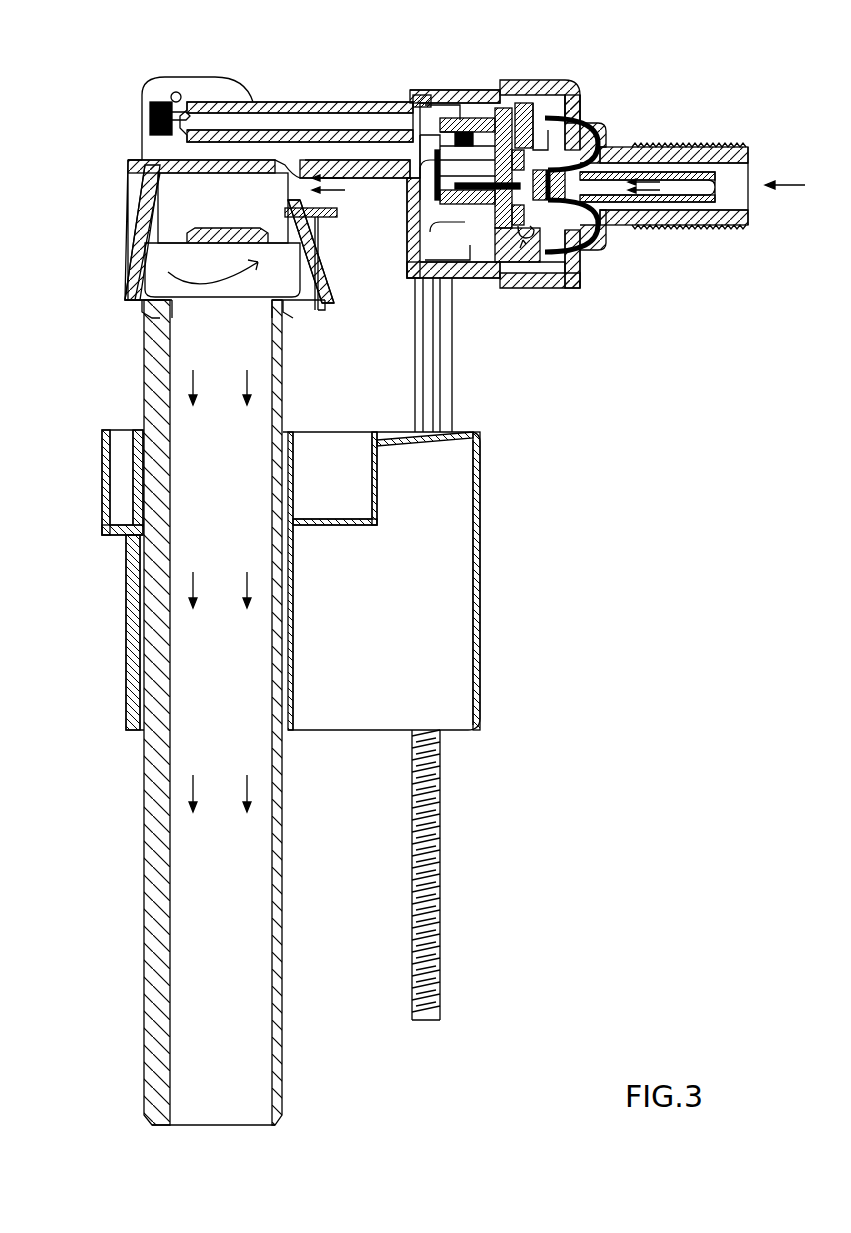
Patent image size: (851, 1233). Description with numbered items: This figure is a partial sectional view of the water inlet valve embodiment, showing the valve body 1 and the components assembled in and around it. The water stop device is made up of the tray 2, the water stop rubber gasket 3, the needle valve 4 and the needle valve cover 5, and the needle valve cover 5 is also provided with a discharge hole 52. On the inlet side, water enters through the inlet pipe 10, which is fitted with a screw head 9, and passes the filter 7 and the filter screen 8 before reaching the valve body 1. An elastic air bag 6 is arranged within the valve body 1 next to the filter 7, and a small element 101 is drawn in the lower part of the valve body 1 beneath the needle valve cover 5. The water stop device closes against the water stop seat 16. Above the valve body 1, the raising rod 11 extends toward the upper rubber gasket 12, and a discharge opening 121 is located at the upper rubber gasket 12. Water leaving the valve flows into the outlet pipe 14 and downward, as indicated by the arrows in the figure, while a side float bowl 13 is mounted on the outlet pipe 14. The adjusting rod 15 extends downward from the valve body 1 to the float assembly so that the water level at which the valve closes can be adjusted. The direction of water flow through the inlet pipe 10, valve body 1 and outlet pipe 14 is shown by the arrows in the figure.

The valve body 1 is at (415, 95).
The tray 2 is at (457, 137).
The water stop rubber gasket 3 is at (485, 132).
The needle valve 4 is at (568, 93).
The needle valve cover 5 is at (513, 142).
The discharge hole 52 is at (420, 100).
The elastic air bag 6 is at (587, 128).
The filter 7 is at (577, 245).
The filter screen 8 is at (530, 250).
The screw head 9 is at (683, 153).
The inlet pipe 10 is at (697, 173).
The spring 101 is at (526, 240).
The raising rod 11 is at (228, 90).
The upper rubber gasket 12 is at (165, 102).
The discharge opening 121 is at (184, 114).
The float bowl 13 is at (102, 460).
The outlet pipe 14 is at (303, 183).
The adjusting rod 15 is at (435, 373).
The water stop seat 16 is at (417, 133).